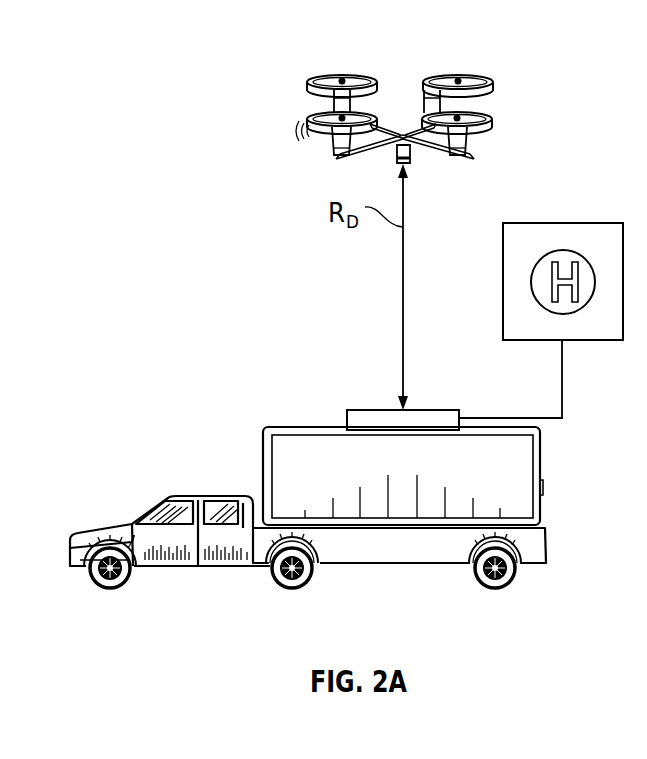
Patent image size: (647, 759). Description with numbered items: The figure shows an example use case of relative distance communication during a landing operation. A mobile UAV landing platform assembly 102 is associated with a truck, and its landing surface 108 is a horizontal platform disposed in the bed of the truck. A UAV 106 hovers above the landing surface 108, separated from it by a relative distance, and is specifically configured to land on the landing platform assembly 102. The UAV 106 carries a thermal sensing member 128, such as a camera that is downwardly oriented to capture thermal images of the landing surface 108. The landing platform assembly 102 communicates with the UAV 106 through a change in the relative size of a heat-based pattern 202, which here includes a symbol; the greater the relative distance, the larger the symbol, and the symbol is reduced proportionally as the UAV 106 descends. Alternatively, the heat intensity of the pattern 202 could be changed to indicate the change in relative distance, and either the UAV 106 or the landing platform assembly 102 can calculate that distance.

The mobile UAV landing platform assembly 102 is at (254, 380).
The UAV 106 is at (234, 125).
The landing surface 108 is at (380, 408).
The thermal sensing member 128 is at (417, 118).
The pattern 202 is at (562, 249).